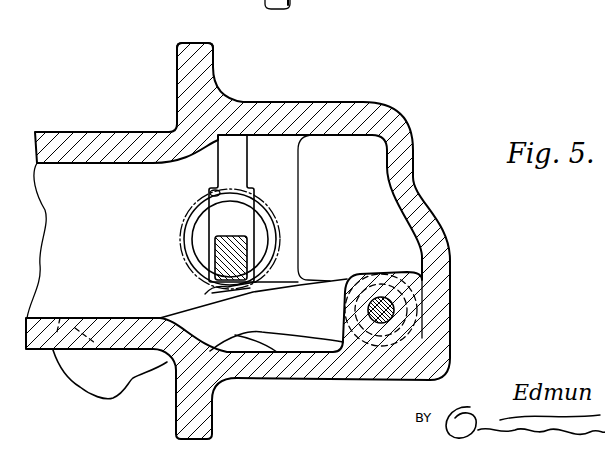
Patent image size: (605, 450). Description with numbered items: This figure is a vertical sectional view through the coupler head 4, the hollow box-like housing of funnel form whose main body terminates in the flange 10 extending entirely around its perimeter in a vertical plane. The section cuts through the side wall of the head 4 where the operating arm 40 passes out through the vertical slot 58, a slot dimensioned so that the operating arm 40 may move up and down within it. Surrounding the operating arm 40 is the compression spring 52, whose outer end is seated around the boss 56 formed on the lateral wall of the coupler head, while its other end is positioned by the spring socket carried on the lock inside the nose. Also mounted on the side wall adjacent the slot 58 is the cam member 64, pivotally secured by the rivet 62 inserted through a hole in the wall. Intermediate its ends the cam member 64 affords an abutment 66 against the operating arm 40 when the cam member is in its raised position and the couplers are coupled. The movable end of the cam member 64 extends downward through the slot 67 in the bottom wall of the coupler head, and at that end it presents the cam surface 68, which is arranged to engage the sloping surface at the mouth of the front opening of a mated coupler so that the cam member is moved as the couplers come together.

The head 4 is at (368, 104).
The flange 10 is at (194, 52).
The operating arm 40 is at (232, 256).
The compression spring 52 is at (263, 202).
The boss 56 is at (258, 228).
The vertical slot 58 is at (210, 193).
The rivet 62 is at (392, 306).
The cam member 64 is at (253, 315).
The abutment 66 is at (208, 290).
The slot 67 is at (60, 318).
The cam surface 68 is at (70, 382).